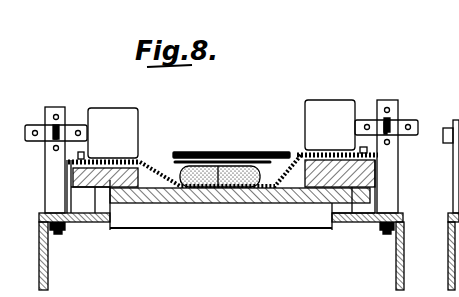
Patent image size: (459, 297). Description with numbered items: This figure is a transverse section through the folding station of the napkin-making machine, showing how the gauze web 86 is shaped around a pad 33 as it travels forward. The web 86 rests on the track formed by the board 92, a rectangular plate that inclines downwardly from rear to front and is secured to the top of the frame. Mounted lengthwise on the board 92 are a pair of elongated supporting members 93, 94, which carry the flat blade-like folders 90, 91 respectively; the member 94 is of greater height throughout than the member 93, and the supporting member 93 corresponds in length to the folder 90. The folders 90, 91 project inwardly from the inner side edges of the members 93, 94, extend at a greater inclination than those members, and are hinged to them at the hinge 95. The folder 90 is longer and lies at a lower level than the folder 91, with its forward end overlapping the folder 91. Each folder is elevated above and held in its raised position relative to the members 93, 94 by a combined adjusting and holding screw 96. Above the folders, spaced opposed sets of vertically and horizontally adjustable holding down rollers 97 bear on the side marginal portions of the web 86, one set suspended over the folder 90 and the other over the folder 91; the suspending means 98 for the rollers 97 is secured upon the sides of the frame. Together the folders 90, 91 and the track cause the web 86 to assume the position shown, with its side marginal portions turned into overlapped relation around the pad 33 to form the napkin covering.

The pad 33 is at (218, 187).
The web 86 is at (280, 162).
The folder 90 is at (160, 157).
The folder 91 is at (227, 152).
The board 92 is at (170, 197).
The supporting member 93 is at (95, 213).
The supporting member 94 is at (352, 175).
The hinge 95 is at (68, 162).
The combined adjusting and holding screw 96 is at (80, 152).
The holding down roller 97 is at (123, 118).
The suspending means 98 is at (53, 167).